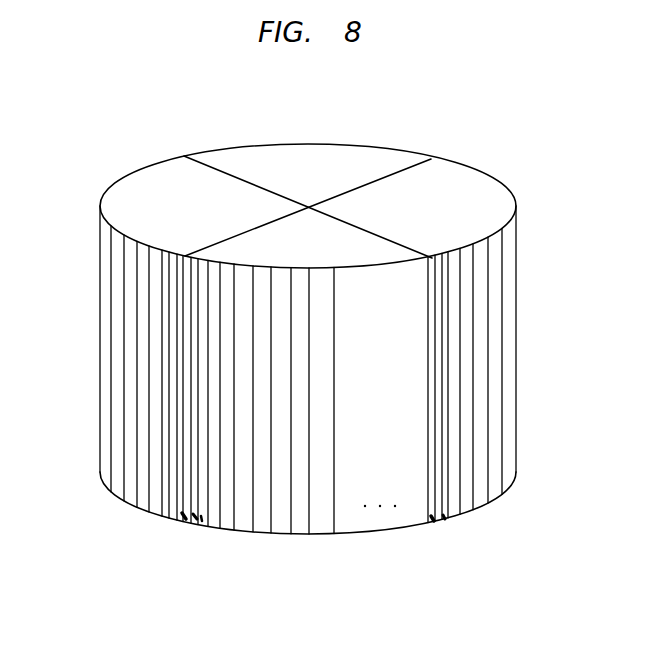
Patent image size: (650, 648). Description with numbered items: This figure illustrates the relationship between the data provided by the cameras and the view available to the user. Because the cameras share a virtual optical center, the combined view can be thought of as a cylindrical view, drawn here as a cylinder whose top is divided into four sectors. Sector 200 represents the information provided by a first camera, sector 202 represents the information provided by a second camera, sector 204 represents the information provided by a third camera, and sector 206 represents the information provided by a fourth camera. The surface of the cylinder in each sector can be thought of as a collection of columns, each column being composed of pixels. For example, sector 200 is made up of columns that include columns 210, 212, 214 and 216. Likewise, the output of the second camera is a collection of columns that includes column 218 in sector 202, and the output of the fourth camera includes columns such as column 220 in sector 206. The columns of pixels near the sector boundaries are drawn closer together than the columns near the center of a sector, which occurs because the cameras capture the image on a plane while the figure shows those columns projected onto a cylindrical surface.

The sector 200 is at (400, 263).
The sector 202 is at (473, 200).
The sector 204 is at (256, 160).
The sector 206 is at (142, 200).
The column 210 is at (182, 518).
The column 212 is at (187, 518).
The column 214 is at (202, 520).
The column 216 is at (425, 525).
The column 218 is at (443, 520).
The column 220 is at (167, 512).